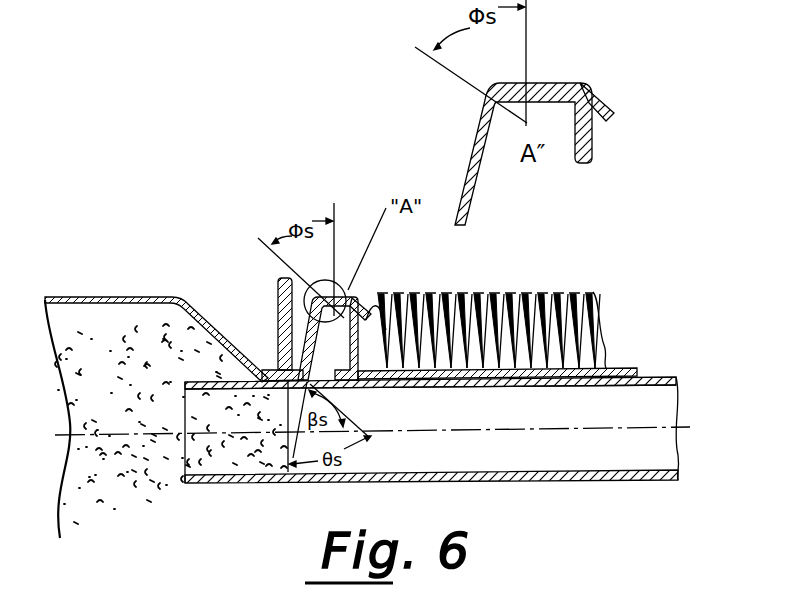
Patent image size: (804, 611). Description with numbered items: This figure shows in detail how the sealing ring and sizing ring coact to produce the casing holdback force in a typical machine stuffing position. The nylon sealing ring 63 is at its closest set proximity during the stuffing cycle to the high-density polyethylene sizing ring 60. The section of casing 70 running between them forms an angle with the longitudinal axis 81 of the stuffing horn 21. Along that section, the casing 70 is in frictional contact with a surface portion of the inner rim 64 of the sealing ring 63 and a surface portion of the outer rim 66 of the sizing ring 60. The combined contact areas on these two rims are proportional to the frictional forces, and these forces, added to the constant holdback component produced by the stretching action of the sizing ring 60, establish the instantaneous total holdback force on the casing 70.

The stuffing horn 21 is at (649, 378).
The sizing ring 60 is at (380, 340).
The sealing ring 63 is at (280, 290).
The inner rim 64 is at (271, 386).
The outer rim 66 is at (347, 296).
The casing 70 is at (358, 362).
The longitudinal axis 81 is at (548, 422).